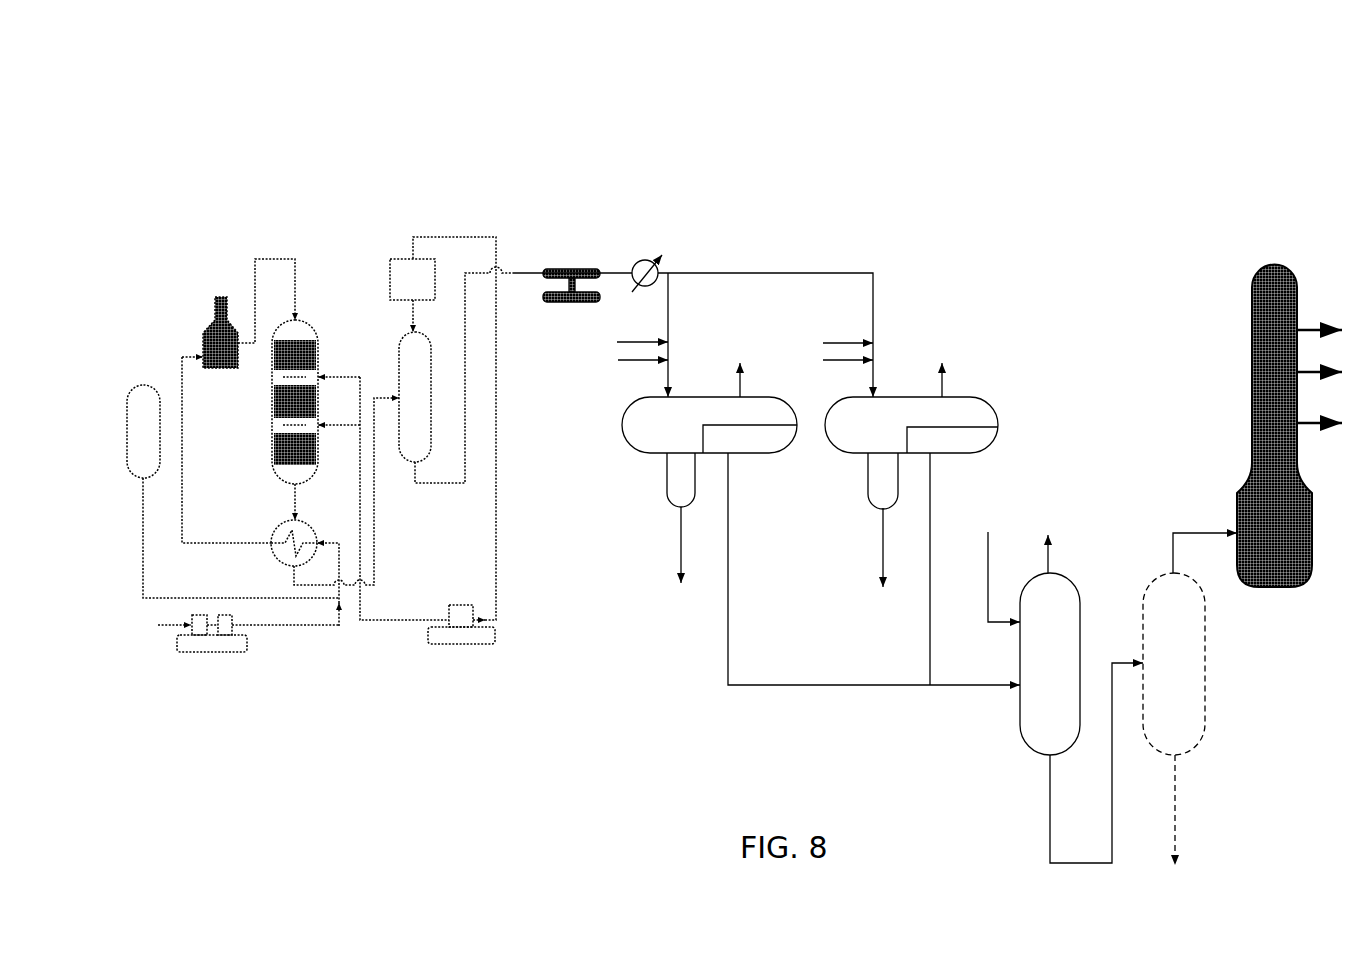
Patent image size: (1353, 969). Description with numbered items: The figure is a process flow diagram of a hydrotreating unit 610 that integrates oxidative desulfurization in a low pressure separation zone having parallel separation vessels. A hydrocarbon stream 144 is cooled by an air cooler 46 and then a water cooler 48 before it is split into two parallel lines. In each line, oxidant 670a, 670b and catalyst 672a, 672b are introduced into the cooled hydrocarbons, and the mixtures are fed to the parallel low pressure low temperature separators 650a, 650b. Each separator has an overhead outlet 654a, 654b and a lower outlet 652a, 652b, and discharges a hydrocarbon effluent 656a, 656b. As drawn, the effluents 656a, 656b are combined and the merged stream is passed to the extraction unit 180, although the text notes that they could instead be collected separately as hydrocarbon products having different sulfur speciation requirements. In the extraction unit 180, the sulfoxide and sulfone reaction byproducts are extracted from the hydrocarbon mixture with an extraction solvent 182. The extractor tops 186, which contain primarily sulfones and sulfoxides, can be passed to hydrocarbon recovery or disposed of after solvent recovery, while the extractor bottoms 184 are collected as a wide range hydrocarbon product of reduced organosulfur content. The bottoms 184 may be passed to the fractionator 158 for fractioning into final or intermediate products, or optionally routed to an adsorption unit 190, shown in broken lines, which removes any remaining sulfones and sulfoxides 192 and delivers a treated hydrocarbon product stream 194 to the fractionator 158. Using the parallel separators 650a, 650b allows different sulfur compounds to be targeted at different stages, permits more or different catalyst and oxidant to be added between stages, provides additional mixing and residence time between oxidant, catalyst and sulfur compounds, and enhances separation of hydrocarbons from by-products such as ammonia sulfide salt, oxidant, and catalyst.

The hydrotreating unit 610 is at (292, 128).
The air cooler 46 is at (572, 269).
The water cooler 48 is at (647, 263).
The hydrocarbon stream 144 is at (521, 275).
The oxidant 670a is at (640, 342).
The catalyst 672a is at (629, 362).
The vapor outlet stream 654a is at (733, 383).
The low pressure low temperature separator 650a is at (658, 431).
The aqueous outlet stream 652a is at (680, 533).
The effluent 656a is at (728, 545).
The oxidant 670b is at (845, 343).
The catalyst 672b is at (833, 362).
The vapor outlet stream 654b is at (945, 384).
The low pressure low temperature separator 650b is at (861, 431).
The aqueous outlet stream 652b is at (882, 530).
The effluent 656b is at (930, 672).
The extraction solvent 182 is at (988, 588).
The extraction unit 180 is at (1034, 677).
The extractor tops 186 is at (1050, 561).
The extractor bottoms 184 is at (1050, 807).
The adsorption unit 190 is at (1158, 677).
The hydrocarbon product stream 194 is at (1173, 543).
The remaining sulfones and/or sulfoxides 192 is at (1175, 805).
The fractionator 158 is at (1255, 545).